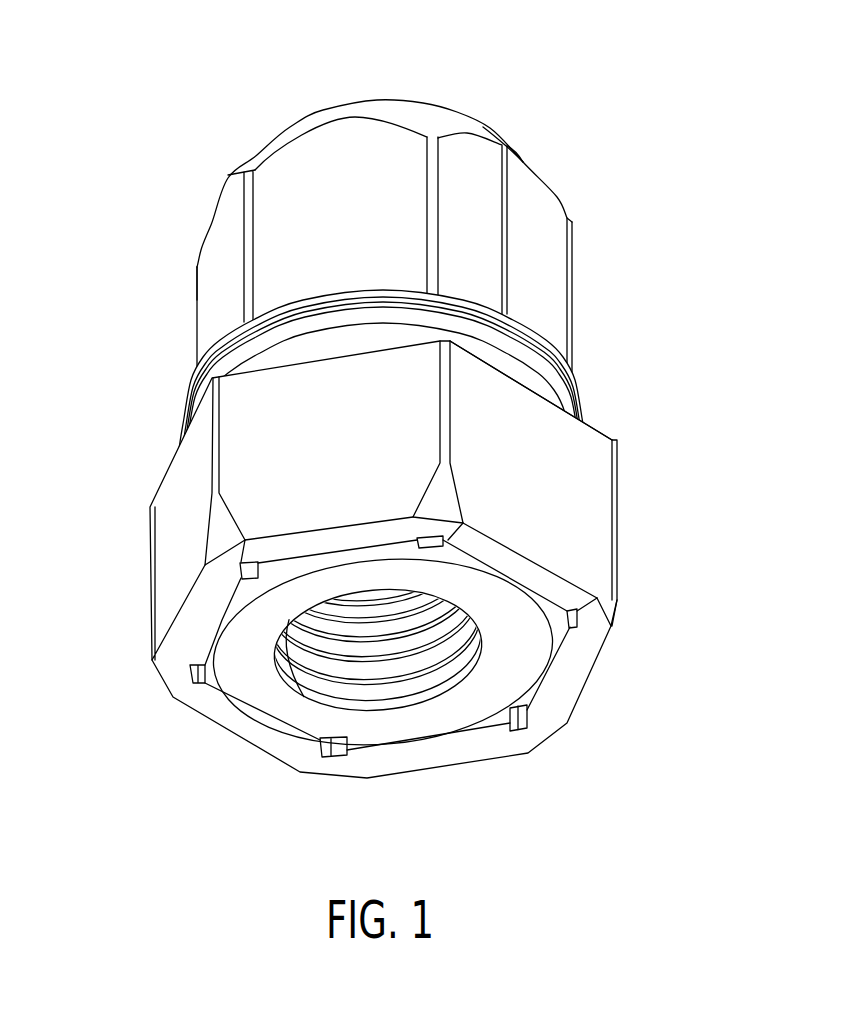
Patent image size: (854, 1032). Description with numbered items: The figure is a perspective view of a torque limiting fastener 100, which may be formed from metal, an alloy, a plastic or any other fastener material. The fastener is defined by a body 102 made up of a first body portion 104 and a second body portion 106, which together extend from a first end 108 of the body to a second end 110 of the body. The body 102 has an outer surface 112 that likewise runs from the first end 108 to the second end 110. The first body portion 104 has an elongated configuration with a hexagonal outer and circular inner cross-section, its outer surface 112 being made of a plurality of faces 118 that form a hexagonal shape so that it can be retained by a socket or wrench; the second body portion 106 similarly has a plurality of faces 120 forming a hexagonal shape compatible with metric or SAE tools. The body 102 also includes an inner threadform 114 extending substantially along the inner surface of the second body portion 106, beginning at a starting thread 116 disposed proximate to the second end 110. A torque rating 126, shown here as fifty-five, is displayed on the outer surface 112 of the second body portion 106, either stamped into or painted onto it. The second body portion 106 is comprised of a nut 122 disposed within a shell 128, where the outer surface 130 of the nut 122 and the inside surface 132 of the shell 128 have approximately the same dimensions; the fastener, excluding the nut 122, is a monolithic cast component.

The torque limiting fastener 100 is at (188, 96).
The body 102 is at (640, 442).
The first body portion 104 is at (609, 208).
The second body portion 106 is at (144, 495).
The first end 108 is at (190, 263).
The second end 110 is at (632, 628).
The outer surface 112 is at (150, 388).
The inner threadform 114 is at (320, 667).
The starting thread 116 is at (406, 700).
The faces 118 is at (359, 229).
The faces 120 is at (549, 483).
The nut 122 is at (455, 715).
The torque rating 126 is at (262, 422).
The shell 128 is at (282, 768).
The outer surface of the nut 130 is at (255, 718).
The inside surface of the shell 132 is at (432, 762).